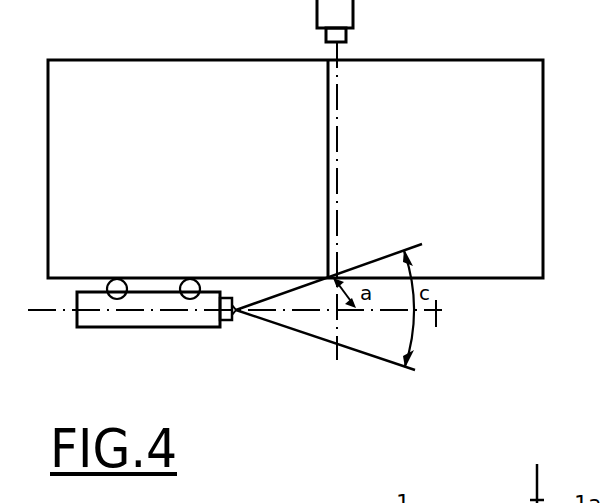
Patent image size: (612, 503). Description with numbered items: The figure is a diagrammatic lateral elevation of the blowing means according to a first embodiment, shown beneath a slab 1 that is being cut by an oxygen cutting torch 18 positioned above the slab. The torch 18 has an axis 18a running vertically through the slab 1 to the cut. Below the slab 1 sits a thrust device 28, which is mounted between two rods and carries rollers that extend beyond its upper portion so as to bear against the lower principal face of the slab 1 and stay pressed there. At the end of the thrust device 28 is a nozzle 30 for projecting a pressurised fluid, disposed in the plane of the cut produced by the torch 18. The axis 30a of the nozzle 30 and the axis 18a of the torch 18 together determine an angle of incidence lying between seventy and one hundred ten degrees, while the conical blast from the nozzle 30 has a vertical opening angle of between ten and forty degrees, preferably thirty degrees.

The slab 1 is at (98, 54).
The oxygen cutting torch 18 is at (353, 2).
The axis of the torch 18a is at (337, 360).
The thrust device 28 is at (134, 342).
The nozzle 30 is at (227, 322).
The axis of the nozzle 30a is at (436, 327).